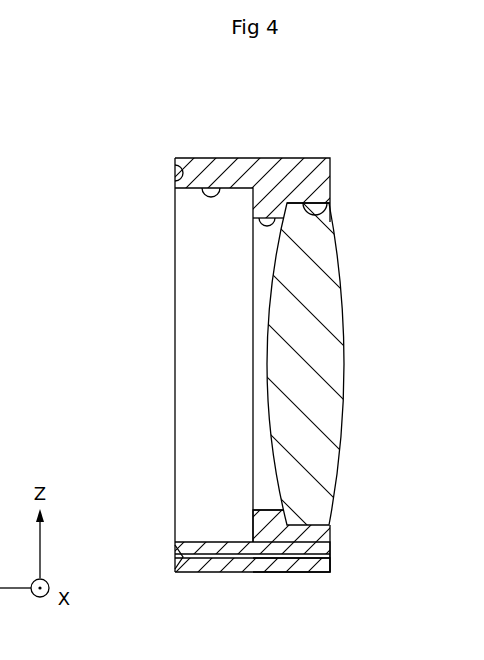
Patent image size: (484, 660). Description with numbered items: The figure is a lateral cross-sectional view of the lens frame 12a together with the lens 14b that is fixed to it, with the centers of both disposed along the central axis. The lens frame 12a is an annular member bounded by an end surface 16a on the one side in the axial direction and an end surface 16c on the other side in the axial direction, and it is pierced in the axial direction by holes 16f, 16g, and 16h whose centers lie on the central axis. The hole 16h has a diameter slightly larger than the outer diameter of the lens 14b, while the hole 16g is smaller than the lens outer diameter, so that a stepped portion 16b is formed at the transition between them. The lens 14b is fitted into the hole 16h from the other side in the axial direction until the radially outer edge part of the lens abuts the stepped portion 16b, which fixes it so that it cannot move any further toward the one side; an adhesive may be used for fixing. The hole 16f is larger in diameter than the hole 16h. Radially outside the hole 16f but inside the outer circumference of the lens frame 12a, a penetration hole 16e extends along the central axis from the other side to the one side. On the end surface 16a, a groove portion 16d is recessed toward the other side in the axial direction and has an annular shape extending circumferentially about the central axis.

The lens frame 12a is at (314, 170).
The lens 14b is at (331, 418).
The end surface 16a is at (173, 570).
The stepped portion 16b is at (283, 518).
The end surface 16c is at (330, 538).
The groove portion 16d is at (175, 172).
The penetration hole 16e is at (288, 553).
The hole 16f is at (221, 190).
The hole 16g is at (279, 216).
The hole 16h is at (330, 220).